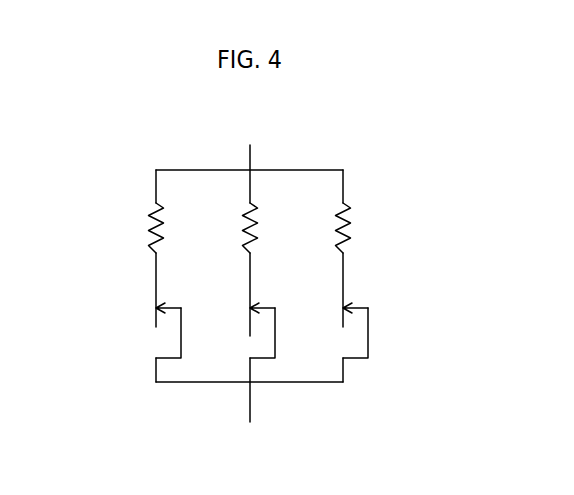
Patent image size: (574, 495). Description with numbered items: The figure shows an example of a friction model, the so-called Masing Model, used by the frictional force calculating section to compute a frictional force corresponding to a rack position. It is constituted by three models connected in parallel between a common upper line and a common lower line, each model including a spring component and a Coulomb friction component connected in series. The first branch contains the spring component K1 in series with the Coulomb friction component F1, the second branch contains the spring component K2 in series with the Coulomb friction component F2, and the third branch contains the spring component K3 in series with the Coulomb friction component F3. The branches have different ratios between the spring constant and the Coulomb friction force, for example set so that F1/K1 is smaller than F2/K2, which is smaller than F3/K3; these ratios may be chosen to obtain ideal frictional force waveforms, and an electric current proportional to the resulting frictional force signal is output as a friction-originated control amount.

The spring component K1 is at (143, 228).
The spring component K2 is at (238, 228).
The spring component K3 is at (331, 228).
The Coulomb friction component F1 is at (153, 305).
The Coulomb friction component F2 is at (247, 305).
The Coulomb friction component F3 is at (340, 305).